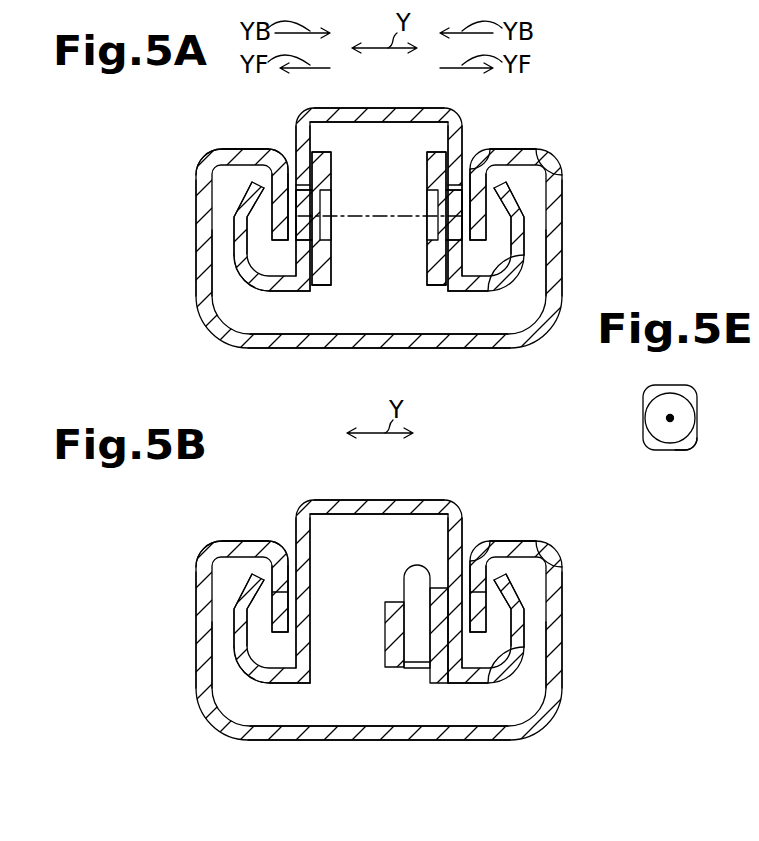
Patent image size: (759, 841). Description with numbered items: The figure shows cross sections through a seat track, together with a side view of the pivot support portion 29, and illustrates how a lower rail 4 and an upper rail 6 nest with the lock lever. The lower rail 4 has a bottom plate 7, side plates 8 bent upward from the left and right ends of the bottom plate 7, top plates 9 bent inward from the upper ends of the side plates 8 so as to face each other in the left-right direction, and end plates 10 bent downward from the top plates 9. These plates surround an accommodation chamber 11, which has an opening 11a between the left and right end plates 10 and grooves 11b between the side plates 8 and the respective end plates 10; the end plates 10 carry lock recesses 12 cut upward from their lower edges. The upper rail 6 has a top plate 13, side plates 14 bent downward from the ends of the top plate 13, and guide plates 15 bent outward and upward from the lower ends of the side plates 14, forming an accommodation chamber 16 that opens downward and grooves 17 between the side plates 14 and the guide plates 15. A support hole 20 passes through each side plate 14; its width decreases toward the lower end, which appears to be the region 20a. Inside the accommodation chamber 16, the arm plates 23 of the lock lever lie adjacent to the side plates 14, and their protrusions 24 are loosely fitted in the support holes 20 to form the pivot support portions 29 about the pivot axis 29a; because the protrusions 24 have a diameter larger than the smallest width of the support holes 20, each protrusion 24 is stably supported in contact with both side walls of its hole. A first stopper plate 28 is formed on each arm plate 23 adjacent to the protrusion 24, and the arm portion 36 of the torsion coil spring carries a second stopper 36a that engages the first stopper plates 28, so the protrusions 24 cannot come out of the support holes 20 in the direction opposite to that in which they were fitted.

In FIG. 5A, the lower rail 4 is at (447, 351).
In FIG. 5B, the lower rail 4 is at (422, 742).
In FIG. 5A, the upper rail 6 is at (422, 98).
In FIG. 5B, the upper rail 6 is at (439, 490).
In FIG. 5A, the bottom plate 7 is at (332, 348).
In FIG. 5B, the bottom plate 7 is at (332, 740).
In FIG. 5A, the side plates 8 is at (200, 245).
In FIG. 5B, the side plates 8 is at (200, 632).
In FIG. 5A, the top plates 9 is at (243, 150).
In FIG. 5B, the top plates 9 is at (230, 543).
In FIG. 5A, the end plates 10 is at (245, 230).
In FIG. 5B, the end plates 10 is at (268, 565).
In FIG. 5A, the accommodation chamber 11 is at (404, 333).
In FIG. 5B, the accommodation chamber 11 is at (378, 726).
In FIG. 5A, the opening 11a is at (281, 172).
In FIG. 5B, the opening 11a is at (288, 565).
In FIG. 5A, the grooves 11b is at (222, 175).
In FIG. 5B, the grooves 11b is at (222, 578).
In FIG. 5B, the lock recesses 12 is at (273, 628).
In FIG. 5A, the top plate 13 is at (358, 109).
In FIG. 5B, the top plate 13 is at (342, 504).
In FIG. 5A, the side plates 14 is at (297, 133).
In FIG. 5B, the side plates 14 is at (296, 530).
In FIG. 5A, the guide plates 15 is at (243, 198).
In FIG. 5B, the guide plates 15 is at (245, 600).
In FIG. 5A, the accommodation chamber 16 is at (395, 118).
In FIG. 5B, the accommodation chamber 16 is at (378, 516).
In FIG. 5A, the grooves 17 is at (278, 288).
In FIG. 5B, the grooves 17 is at (278, 680).
In FIG. 5A, the support hole 20 is at (322, 178).
In FIG. 5E, the support hole 20 is at (646, 398).
In FIG. 5E, the head edge 20a is at (684, 451).
In FIG. 5A, the arm plates 23 is at (322, 286).
In FIG. 5A, the protrusions 24 is at (312, 210).
In FIG. 5E, the protrusions 24 is at (658, 428).
In FIG. 5B, the first stopper plate 28 is at (393, 670).
In FIG. 5A, the pivot support portion 29 is at (380, 168).
In FIG. 5E, the pivot support portion 29 is at (640, 426).
In FIG. 5A, the pivot axis 29a is at (357, 220).
In FIG. 5E, the pivot axis 29a is at (671, 417).
In FIG. 5B, the arm portion 36 is at (415, 573).
In FIG. 5B, the second stopper 36a is at (418, 664).